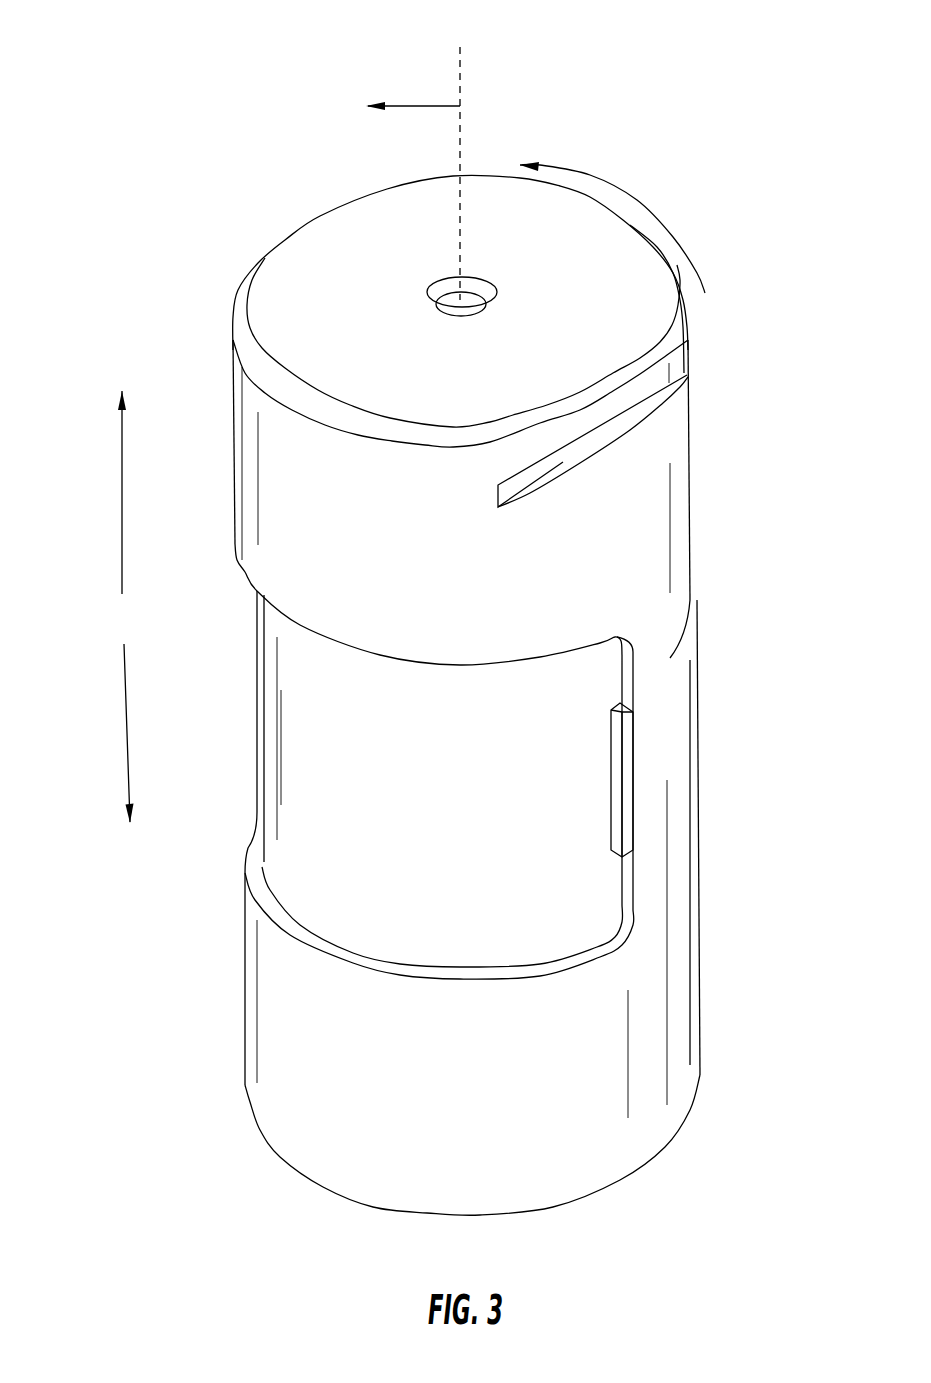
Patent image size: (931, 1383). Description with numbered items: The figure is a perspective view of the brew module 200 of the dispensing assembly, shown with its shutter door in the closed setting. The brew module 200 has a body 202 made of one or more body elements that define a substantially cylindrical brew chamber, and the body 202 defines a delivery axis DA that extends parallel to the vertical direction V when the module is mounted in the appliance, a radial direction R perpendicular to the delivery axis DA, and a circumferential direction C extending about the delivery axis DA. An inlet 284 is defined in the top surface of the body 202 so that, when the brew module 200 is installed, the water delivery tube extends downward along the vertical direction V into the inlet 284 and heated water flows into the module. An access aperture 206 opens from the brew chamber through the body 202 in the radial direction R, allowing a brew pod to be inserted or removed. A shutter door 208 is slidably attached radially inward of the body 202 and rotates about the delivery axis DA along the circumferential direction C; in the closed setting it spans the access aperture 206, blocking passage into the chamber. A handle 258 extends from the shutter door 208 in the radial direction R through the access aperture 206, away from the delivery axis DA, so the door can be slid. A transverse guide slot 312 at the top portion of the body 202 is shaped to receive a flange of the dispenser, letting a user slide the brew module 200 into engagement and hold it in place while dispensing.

The brew module 200 is at (146, 186).
The body 202 is at (234, 494).
The access aperture 206 is at (567, 973).
The shutter door 208 is at (307, 758).
The handle 258 is at (618, 795).
The inlet 284 is at (443, 298).
The transverse guide slot 312 is at (697, 371).
The delivery axis DA is at (461, 72).
The radial direction R is at (418, 106).
The circumferential direction C is at (637, 200).
The vertical direction V is at (125, 607).